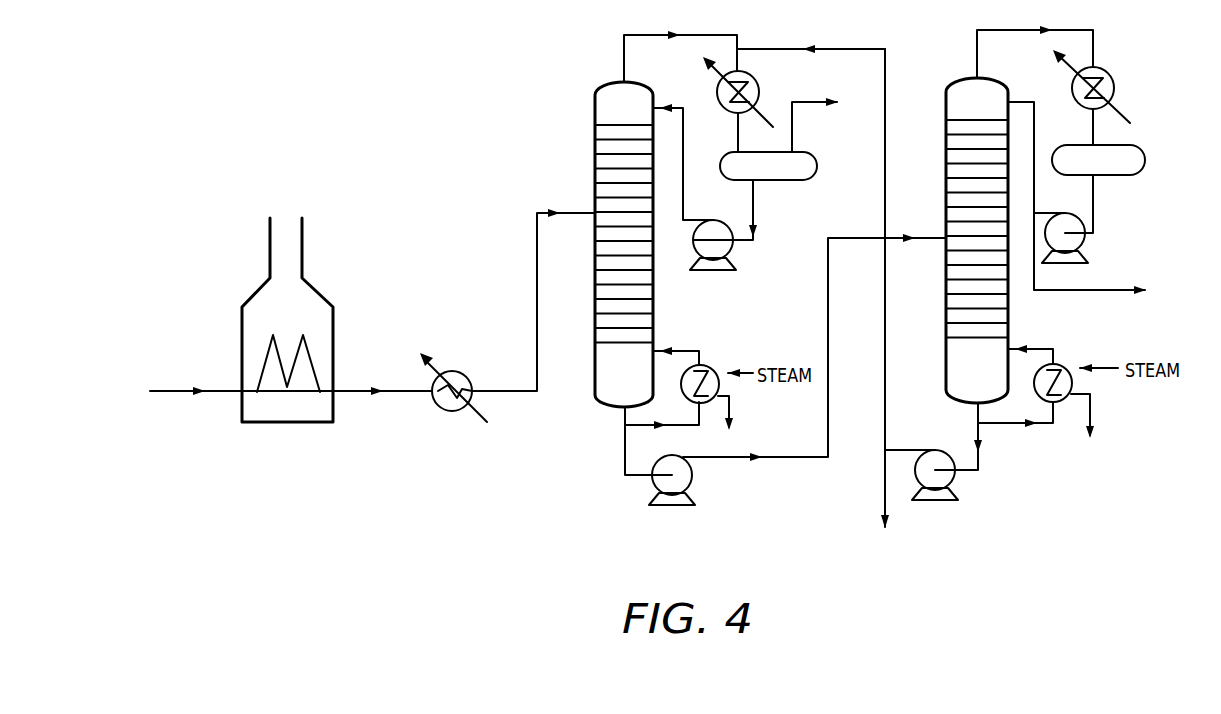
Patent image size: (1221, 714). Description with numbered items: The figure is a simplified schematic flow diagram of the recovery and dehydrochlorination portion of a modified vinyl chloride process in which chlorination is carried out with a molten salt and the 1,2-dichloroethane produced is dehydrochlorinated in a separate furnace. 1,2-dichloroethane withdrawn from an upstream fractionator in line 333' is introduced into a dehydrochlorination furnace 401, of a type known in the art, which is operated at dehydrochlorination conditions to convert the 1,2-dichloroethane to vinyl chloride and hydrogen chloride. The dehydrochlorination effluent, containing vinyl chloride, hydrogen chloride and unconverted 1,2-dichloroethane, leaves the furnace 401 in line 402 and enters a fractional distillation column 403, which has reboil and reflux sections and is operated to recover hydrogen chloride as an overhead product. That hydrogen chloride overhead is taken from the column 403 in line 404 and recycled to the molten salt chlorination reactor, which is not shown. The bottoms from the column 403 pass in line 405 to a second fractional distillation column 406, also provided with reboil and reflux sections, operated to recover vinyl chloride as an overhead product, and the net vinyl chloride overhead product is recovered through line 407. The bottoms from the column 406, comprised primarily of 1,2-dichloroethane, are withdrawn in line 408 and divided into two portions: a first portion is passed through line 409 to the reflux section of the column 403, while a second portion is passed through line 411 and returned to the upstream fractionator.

The line 333' is at (291, 370).
The dehydrochlorination furnace 401 is at (308, 423).
The line 402 is at (477, 391).
The fractional distillation column 403 is at (593, 173).
The line 404 is at (800, 102).
The line 405 is at (828, 409).
The fractional distillation column 406 is at (1008, 313).
The line 407 is at (1110, 292).
The line 408 is at (973, 471).
The line 409 is at (887, 367).
The line 411 is at (888, 498).